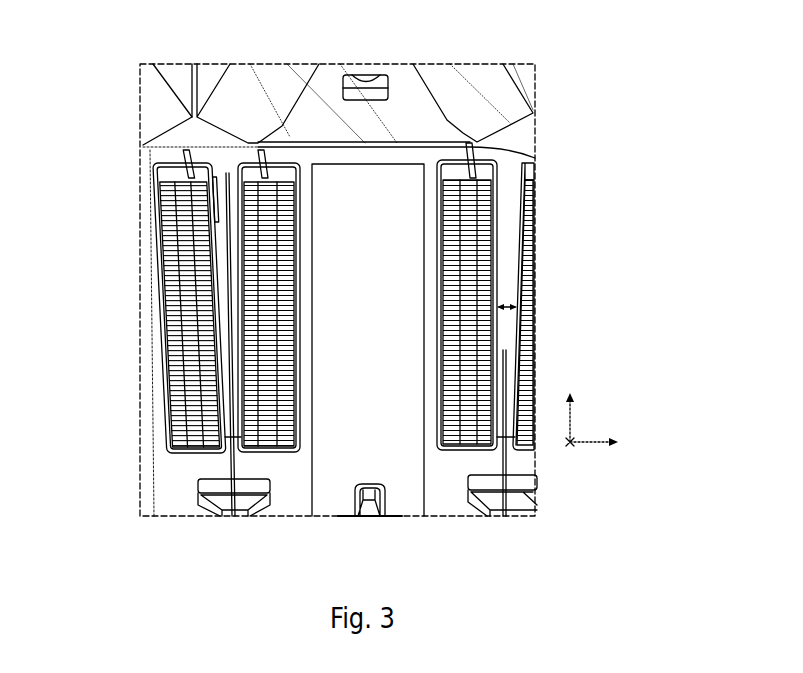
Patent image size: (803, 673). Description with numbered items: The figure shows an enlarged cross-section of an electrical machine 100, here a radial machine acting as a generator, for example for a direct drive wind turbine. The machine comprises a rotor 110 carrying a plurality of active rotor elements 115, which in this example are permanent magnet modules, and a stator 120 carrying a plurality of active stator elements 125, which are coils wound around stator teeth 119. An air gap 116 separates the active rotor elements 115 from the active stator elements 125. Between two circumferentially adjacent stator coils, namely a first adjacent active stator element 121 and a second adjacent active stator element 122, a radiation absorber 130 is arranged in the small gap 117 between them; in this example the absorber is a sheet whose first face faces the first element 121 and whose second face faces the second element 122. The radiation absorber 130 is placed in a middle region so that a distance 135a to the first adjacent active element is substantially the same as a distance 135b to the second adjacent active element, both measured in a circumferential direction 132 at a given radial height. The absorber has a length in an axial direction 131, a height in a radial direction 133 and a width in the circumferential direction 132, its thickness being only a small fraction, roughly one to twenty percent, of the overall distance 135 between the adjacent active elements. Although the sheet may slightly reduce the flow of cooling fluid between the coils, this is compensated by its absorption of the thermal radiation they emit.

The electrical machine 100 is at (600, 78).
The rotor 110 is at (403, 54).
The active rotor elements 115 is at (510, 87).
The air gap 116 is at (478, 140).
The gap 117 is at (525, 192).
The stator teeth 119 is at (410, 237).
The stator 120 is at (508, 522).
The first adjacent active stator element 121 is at (162, 196).
The second adjacent active stator element 122 is at (180, 252).
The active stator elements 125 is at (458, 240).
The radiation absorber 130 is at (190, 355).
The axial direction 131 is at (573, 453).
The circumferential direction 132 is at (608, 453).
The radial direction 133 is at (573, 425).
The distance between adjacent active elements 135 is at (510, 313).
The distance between radiation absorber and first adjacent active element 135a is at (235, 308).
The distance between radiation absorber and second adjacent active element 135b is at (220, 328).